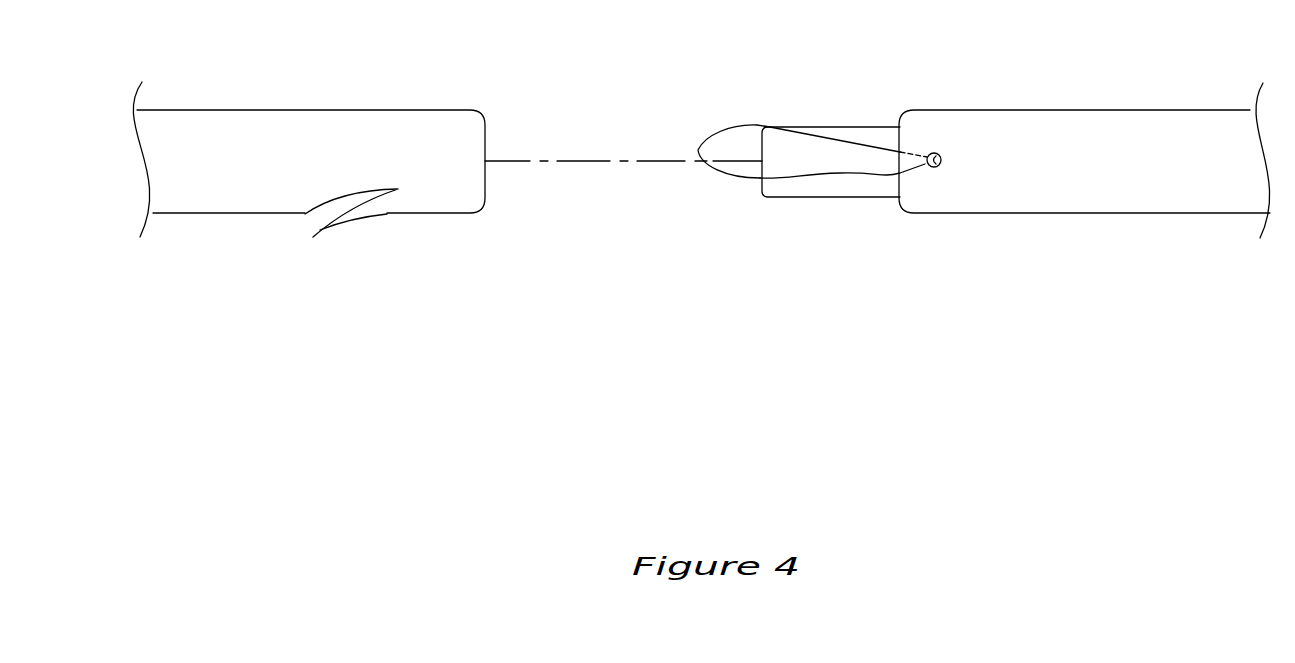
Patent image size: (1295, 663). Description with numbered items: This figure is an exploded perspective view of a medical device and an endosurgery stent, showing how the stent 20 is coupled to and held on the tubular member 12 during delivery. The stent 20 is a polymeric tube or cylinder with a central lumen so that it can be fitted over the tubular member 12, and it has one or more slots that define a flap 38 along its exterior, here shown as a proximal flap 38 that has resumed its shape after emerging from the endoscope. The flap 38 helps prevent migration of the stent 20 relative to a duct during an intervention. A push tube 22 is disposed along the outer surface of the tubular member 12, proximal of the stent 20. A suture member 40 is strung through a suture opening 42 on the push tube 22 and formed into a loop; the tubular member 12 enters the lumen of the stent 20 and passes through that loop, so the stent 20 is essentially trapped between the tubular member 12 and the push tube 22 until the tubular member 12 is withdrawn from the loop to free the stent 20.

The stent 20 is at (312, 78).
The push tube 22 is at (1100, 120).
The flap 38 is at (333, 227).
The suture member 40 is at (745, 123).
The suture opening 42 is at (945, 157).
The tubular member 12 is at (808, 187).